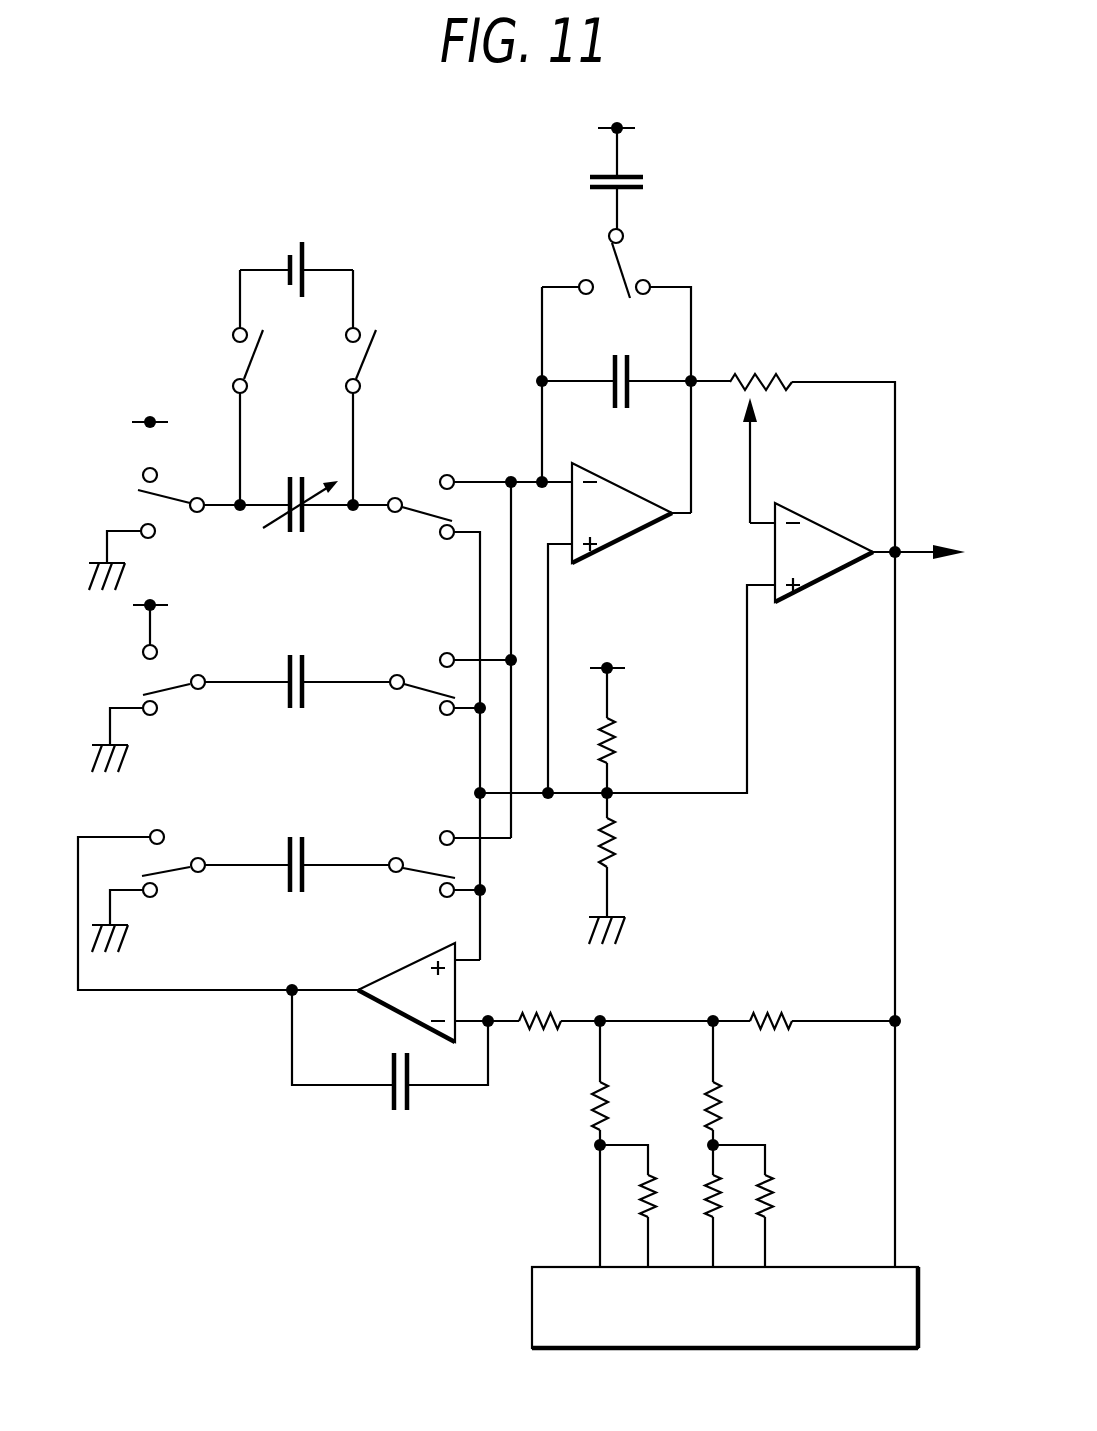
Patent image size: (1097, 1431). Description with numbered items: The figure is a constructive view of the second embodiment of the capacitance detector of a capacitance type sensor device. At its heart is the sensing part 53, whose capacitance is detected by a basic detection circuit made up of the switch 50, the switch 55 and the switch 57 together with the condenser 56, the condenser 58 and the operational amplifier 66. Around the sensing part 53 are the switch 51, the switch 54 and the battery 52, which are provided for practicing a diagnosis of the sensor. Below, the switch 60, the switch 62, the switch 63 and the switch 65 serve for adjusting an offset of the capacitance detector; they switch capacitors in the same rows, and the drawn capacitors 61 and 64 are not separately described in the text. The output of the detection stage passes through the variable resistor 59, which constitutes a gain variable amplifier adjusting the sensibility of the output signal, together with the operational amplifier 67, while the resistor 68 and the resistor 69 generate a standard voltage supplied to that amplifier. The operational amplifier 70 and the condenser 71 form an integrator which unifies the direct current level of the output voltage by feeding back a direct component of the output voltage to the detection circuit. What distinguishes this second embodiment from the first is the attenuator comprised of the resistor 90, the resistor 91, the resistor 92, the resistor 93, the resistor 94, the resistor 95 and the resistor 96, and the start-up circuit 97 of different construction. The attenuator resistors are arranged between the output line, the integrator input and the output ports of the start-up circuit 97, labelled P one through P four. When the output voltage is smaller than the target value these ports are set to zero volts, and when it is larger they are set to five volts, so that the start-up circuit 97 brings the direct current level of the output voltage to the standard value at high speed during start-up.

The switch 50 is at (170, 495).
The switch 51 is at (245, 370).
The battery 52 is at (305, 245).
The sensing part 53 is at (290, 470).
The switch 54 is at (365, 365).
The switch 55 is at (430, 495).
The condenser 56 is at (640, 177).
The switch 57 is at (627, 265).
The condenser 58 is at (633, 367).
The variable resistor 59 is at (752, 378).
The switch 60 is at (172, 688).
The capacitor 61 is at (308, 677).
The switch 62 is at (407, 682).
The switch 63 is at (172, 868).
The capacitor 64 is at (308, 858).
The switch 65 is at (407, 865).
The operational amplifier 66 is at (610, 518).
The operational amplifier 67 is at (805, 558).
The resistor 68 is at (617, 740).
The resistor 69 is at (617, 838).
The operational amplifier 70 is at (417, 990).
The condenser 71 is at (410, 1100).
The resistor 90 is at (783, 1018).
The resistor 91 is at (545, 1007).
The resistor 92 is at (613, 1105).
The resistor 93 is at (655, 1177).
The resistor 94 is at (725, 1112).
The resistor 95 is at (742, 1177).
The resistor 96 is at (792, 1177).
The start-up circuit 97 is at (813, 1287).